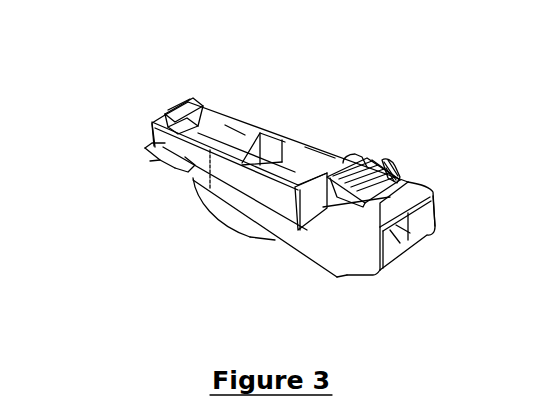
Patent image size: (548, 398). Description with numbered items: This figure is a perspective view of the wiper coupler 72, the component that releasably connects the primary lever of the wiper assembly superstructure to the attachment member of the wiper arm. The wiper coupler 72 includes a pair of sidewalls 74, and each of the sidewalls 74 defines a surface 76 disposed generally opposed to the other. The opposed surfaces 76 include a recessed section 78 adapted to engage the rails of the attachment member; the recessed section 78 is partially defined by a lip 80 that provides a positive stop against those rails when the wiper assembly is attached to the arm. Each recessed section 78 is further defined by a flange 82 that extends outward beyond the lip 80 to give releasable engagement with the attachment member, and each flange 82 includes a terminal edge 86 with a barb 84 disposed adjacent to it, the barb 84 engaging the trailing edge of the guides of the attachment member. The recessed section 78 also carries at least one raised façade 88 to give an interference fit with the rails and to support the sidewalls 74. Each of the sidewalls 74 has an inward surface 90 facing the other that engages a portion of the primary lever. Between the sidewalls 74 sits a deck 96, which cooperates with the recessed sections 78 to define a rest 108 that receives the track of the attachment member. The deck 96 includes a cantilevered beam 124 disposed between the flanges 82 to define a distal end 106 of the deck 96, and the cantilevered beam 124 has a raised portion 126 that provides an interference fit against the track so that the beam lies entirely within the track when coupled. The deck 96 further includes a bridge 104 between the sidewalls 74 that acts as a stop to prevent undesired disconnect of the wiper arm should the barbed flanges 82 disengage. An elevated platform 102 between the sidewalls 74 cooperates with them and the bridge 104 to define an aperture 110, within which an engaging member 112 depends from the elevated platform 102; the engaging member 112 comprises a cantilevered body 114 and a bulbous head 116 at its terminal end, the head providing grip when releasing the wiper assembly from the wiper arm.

The wiper coupler 72 is at (138, 251).
The sidewalls 74 is at (438, 207).
The surface 76 is at (338, 253).
The recessed section 78 is at (200, 170).
The lip 80 is at (279, 218).
The flange 82 is at (157, 139).
The barb 84 is at (150, 161).
The terminal edge 86 is at (152, 124).
The raised façade 88 is at (247, 194).
The inward surface 90 is at (422, 240).
The deck 96 is at (245, 107).
The elevated platform 102 is at (411, 193).
The bridge 104 is at (310, 183).
The distal end 106 is at (190, 104).
The rest 108 is at (321, 142).
The aperture 110 is at (389, 181).
The engaging member 112 is at (364, 172).
The cantilevered body 114 is at (398, 245).
The bulbous head 116 is at (344, 163).
The cantilevered beam 124 is at (197, 99).
The raised portion 126 is at (182, 106).